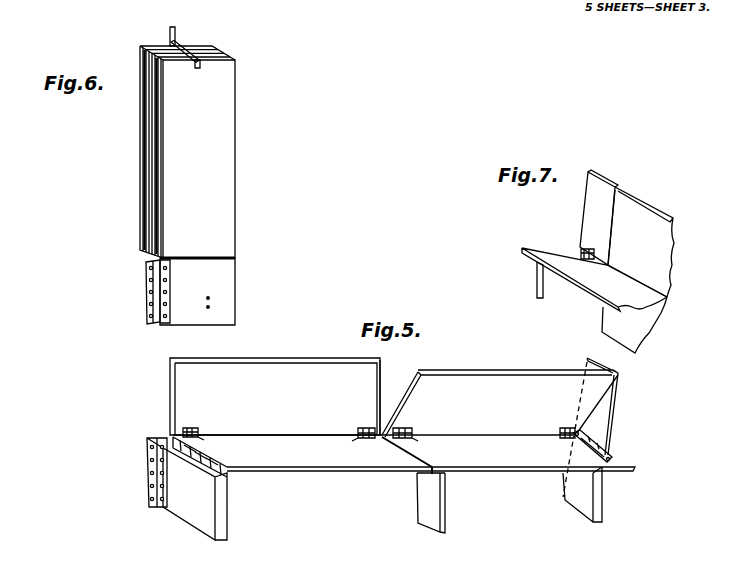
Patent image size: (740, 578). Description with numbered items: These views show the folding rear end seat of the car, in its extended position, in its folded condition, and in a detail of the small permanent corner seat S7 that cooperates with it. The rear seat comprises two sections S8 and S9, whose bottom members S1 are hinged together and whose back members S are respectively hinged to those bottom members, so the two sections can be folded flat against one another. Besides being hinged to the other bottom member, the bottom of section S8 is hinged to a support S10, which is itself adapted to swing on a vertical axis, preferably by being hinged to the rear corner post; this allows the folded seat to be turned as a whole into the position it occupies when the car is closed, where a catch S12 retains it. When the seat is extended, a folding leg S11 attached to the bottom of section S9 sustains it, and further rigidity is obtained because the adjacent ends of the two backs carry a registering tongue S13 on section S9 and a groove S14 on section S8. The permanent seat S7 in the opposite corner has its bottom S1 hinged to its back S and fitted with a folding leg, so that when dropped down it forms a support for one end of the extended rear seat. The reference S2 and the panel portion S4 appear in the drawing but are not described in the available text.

In FIG. 7, the back S is at (599, 217).
In FIG. 5, the back S is at (394, 427).
In FIG. 7, the bottom S1 is at (594, 279).
In FIG. 5, the bottom S1 is at (404, 454).
In FIG. 6, the folded shelf assembly S2 is at (205, 152).
In FIG. 5, the folded shelf assembly S2 is at (357, 534).
In FIG. 7, the back panel section S4 is at (638, 270).
In FIG. 7, the permanent seat S7 is at (590, 261).
In FIG. 6, the rear seat section S8 is at (163, 143).
In FIG. 5, the rear seat section S8 is at (300, 436).
In FIG. 6, the rear seat section S9 is at (156, 205).
In FIG. 7, the rear seat section S9 is at (537, 284).
In FIG. 5, the rear seat section S9 is at (546, 474).
In FIG. 6, the support S10 is at (190, 291).
In FIG. 5, the support S10 is at (187, 488).
In FIG. 5, the folding leg S11 is at (431, 503).
In FIG. 6, the catch S12 is at (190, 45).
In FIG. 5, the tongue S13 is at (382, 379).
In FIG. 5, the groove S14 is at (410, 376).